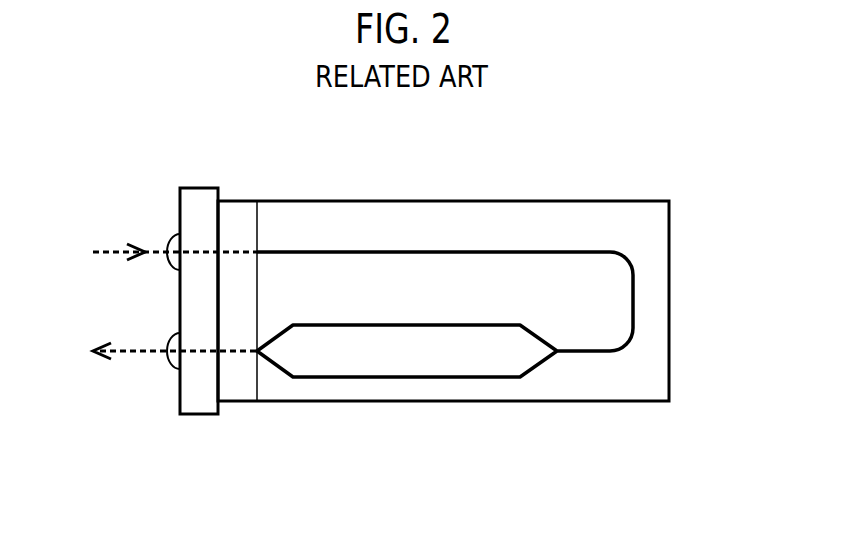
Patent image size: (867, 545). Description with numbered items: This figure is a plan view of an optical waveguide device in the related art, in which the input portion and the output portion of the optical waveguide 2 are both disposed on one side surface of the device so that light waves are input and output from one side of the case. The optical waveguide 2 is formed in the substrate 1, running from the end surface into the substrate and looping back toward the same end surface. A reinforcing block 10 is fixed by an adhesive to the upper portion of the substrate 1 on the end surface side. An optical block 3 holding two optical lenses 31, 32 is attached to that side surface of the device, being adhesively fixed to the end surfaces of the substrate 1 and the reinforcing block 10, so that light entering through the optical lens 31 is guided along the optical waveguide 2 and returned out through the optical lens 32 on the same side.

The substrate 1 is at (623, 228).
The optical waveguide 2 is at (637, 278).
The optical block 3 is at (203, 418).
The reinforcing block 10 is at (240, 222).
The optical lens 31 is at (177, 235).
The optical lens 32 is at (172, 366).